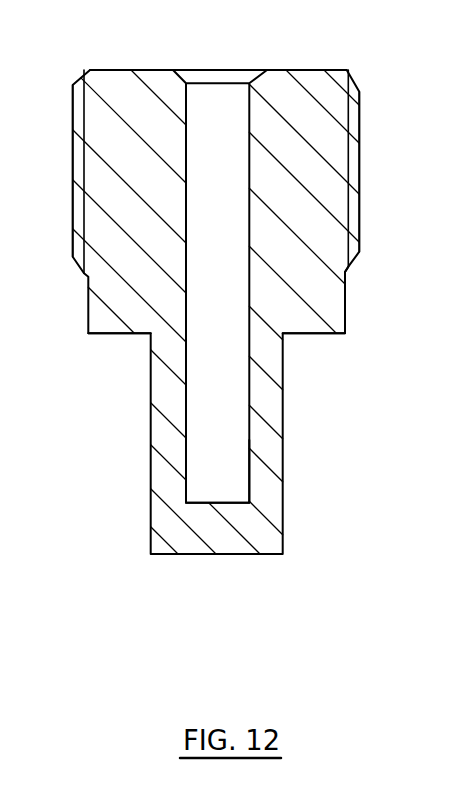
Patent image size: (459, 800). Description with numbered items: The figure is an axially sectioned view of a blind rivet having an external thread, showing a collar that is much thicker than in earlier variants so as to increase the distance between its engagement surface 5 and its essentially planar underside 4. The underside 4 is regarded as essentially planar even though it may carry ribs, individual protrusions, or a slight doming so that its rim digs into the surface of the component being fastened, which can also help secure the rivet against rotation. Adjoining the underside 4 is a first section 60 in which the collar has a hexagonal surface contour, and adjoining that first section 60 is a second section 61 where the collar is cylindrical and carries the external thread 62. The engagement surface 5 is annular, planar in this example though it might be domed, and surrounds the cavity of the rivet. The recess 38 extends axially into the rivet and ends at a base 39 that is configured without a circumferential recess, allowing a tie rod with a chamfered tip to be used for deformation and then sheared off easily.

The essentially planar underside 4 is at (318, 335).
The engagement surface 5 is at (307, 70).
The recess 38 is at (223, 420).
The base 39 is at (226, 503).
The first section 60 is at (327, 304).
The second section 61 is at (100, 188).
The external thread 62 is at (351, 177).